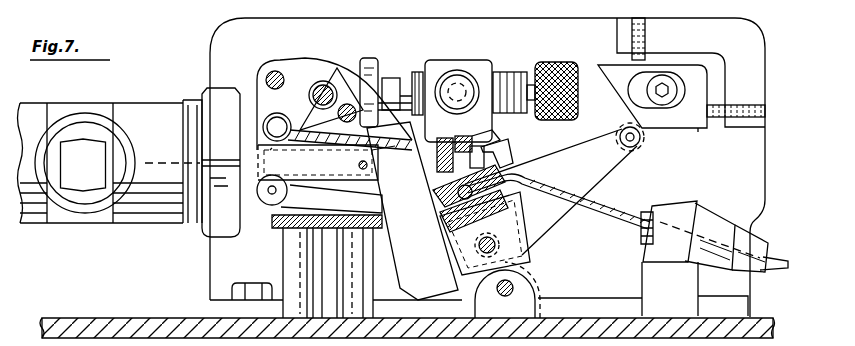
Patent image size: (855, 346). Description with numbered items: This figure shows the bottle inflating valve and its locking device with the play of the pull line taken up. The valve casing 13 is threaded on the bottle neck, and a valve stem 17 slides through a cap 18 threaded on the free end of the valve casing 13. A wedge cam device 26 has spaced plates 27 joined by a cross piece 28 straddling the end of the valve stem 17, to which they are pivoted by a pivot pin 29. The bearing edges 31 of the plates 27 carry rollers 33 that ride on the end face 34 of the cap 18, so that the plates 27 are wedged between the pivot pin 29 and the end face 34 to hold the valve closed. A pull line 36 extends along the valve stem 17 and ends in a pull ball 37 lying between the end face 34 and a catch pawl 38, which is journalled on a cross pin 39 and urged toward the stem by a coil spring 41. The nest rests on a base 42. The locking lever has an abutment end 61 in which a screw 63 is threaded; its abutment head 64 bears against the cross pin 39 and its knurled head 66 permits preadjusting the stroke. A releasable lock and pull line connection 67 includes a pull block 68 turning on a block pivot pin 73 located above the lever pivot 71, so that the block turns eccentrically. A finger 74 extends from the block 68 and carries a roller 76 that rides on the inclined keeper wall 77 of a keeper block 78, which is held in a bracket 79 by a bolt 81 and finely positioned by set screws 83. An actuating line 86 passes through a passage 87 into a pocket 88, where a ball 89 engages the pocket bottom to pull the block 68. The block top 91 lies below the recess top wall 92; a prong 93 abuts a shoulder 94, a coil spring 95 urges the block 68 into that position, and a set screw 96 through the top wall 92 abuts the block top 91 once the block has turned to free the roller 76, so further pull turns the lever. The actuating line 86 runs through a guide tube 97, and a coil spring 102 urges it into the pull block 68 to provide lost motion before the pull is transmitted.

The valve casing 13 is at (162, 103).
The valve stem 17 is at (315, 170).
The cap 18 is at (217, 223).
The wedge cam device 26 is at (240, 79).
The spaced plates 27 is at (300, 60).
The cross piece 28 is at (392, 183).
The pivot pin 29 is at (358, 165).
The bearing edges 31 is at (249, 96).
The rollers 33 is at (283, 190).
The end face 34 is at (259, 214).
The pull line 36 is at (382, 135).
The pull ball 37 is at (282, 159).
The catch pawl 38 is at (300, 110).
The cross pin 39 is at (282, 70).
The coil spring 41 is at (316, 84).
The base 42 is at (152, 318).
The abutment end 61 is at (463, 63).
The screw 63 is at (504, 72).
The abutment head 64 is at (373, 64).
The knurled head 66 is at (571, 62).
The releasable lock and pull line connection 67 is at (618, 181).
The pull block 68 is at (503, 216).
The lever pivot 71 is at (516, 290).
The block pivot pin 73 is at (490, 246).
The finger 74 is at (595, 165).
The roller 76 is at (641, 143).
The inclined keeper wall 77 is at (620, 101).
The keeper block 78 is at (699, 130).
The bracket 79 is at (740, 32).
The bolt 81 is at (663, 100).
The set screws 83 is at (648, 36).
The actuating line 86 is at (607, 208).
The passage 87 is at (522, 173).
The pocket 88 is at (462, 198).
The ball 89 is at (393, 190).
The block top 91 is at (479, 157).
The recess top wall 92 is at (434, 150).
The prong 93 is at (498, 149).
The shoulder 94 is at (481, 140).
The coil spring 95 is at (473, 241).
The set screw 96 is at (446, 150).
The guide tube 97 is at (752, 240).
The coil spring 102 is at (700, 219).